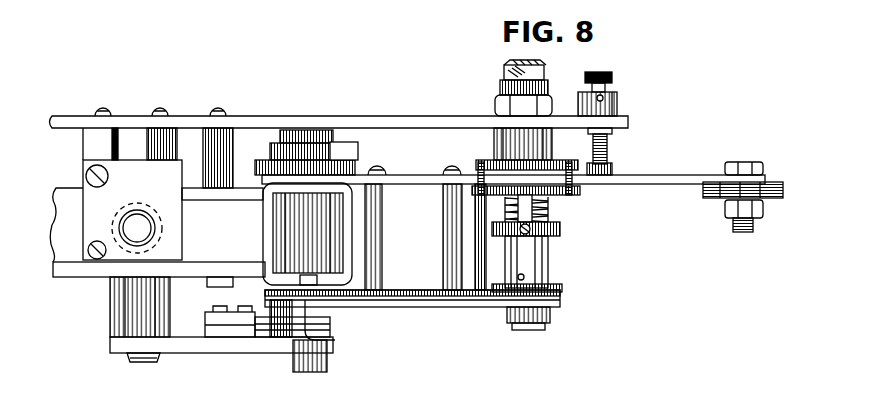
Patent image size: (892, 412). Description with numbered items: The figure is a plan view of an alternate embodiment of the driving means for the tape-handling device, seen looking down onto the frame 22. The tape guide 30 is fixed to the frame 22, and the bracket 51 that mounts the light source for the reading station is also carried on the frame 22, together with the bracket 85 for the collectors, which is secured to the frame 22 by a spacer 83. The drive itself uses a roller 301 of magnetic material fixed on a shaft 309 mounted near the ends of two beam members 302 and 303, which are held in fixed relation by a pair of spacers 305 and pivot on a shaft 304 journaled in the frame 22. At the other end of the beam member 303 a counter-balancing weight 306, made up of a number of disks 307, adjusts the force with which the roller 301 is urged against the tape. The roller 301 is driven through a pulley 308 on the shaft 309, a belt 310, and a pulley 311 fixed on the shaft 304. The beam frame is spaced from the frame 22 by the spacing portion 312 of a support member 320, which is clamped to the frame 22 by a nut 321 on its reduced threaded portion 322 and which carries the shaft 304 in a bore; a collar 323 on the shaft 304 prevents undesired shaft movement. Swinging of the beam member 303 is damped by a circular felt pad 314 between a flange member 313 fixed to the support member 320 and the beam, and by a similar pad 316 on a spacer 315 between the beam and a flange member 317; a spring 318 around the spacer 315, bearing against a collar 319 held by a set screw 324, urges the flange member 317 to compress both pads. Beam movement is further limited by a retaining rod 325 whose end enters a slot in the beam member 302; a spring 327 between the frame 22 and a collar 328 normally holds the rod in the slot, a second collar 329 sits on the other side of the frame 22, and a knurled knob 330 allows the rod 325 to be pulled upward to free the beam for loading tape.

The frame 22 is at (133, 117).
The bracket 51 is at (95, 205).
The tape guide 30 is at (46, 262).
The spacer 83 is at (110, 322).
The bracket 85 is at (201, 345).
The pulley 308 is at (272, 304).
The shaft 309 is at (320, 343).
The beam member 302 is at (404, 306).
The belt 310 is at (483, 295).
The roller 301 is at (278, 219).
The beam member 303 is at (420, 184).
The spacers 305 is at (446, 240).
The flange member 313 is at (480, 177).
The circular pad 314 is at (485, 170).
The pad 316 is at (577, 188).
The spacing portion 312 is at (492, 137).
The nut 321 is at (558, 107).
The shaft 304 is at (512, 73).
The reduced threaded portion 322 is at (523, 68).
The collar 323 is at (512, 70).
The knurled knob 330 is at (584, 76).
The support member 320 is at (568, 130).
The second collar 329 is at (625, 107).
The spring 327 is at (612, 135).
The retaining rod 325 is at (612, 152).
The collar 328 is at (614, 169).
The flange member 317 is at (550, 205).
The spring 318 is at (558, 226).
The collar 319 is at (550, 240).
The set screw 324 is at (548, 256).
The spacer 315 is at (554, 287).
The pulley 311 is at (556, 303).
The disks 307 is at (790, 183).
The counter-balancing weight 306 is at (776, 200).